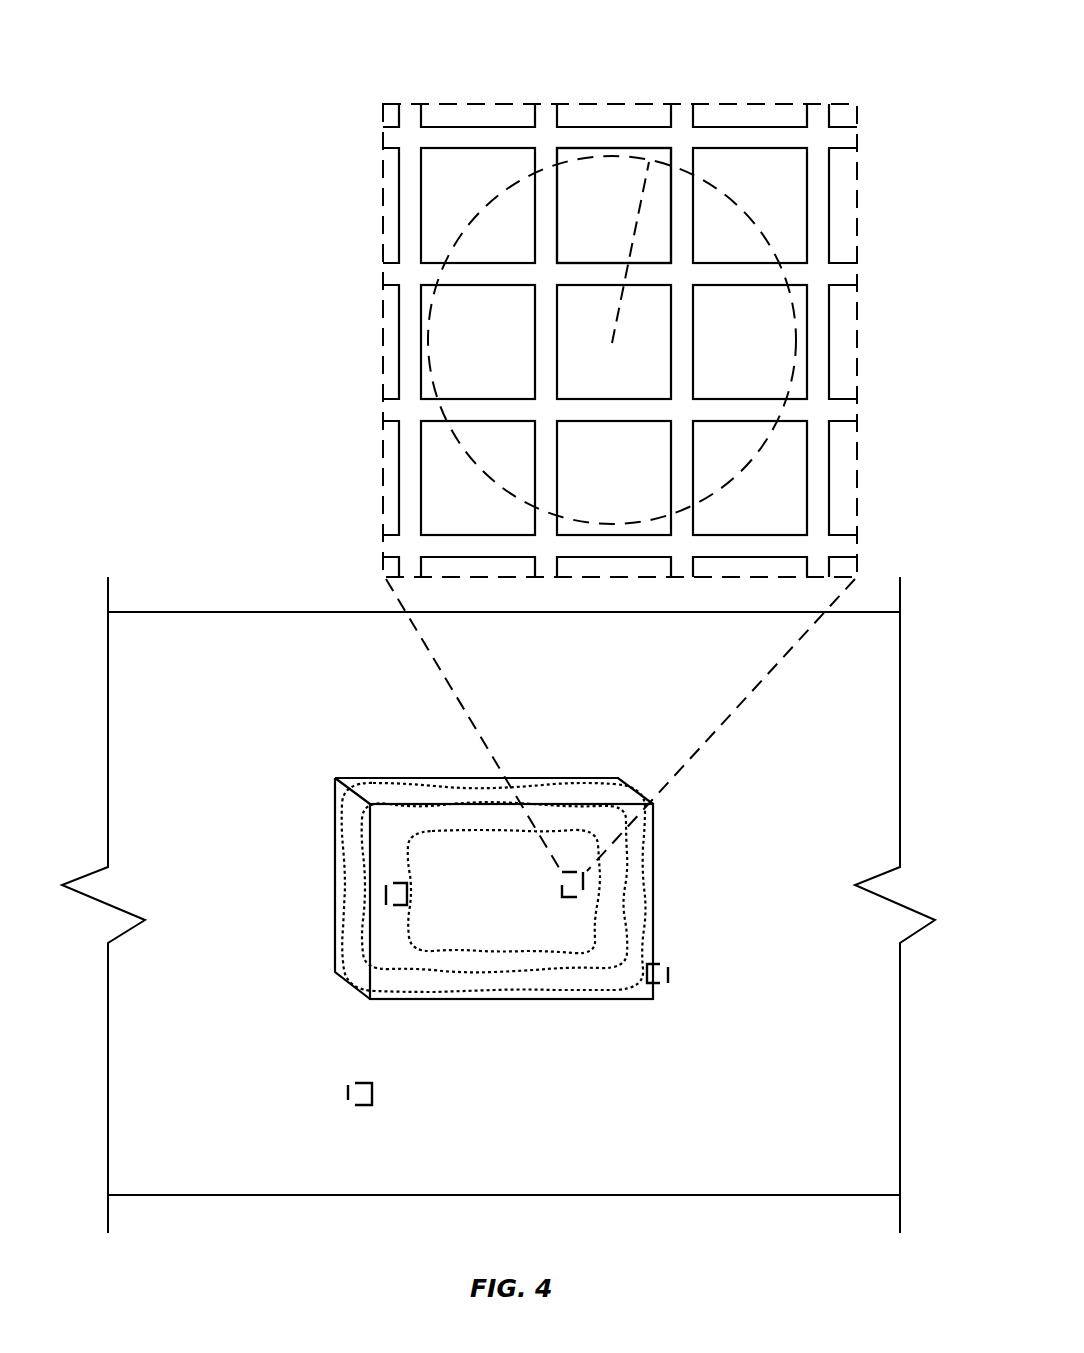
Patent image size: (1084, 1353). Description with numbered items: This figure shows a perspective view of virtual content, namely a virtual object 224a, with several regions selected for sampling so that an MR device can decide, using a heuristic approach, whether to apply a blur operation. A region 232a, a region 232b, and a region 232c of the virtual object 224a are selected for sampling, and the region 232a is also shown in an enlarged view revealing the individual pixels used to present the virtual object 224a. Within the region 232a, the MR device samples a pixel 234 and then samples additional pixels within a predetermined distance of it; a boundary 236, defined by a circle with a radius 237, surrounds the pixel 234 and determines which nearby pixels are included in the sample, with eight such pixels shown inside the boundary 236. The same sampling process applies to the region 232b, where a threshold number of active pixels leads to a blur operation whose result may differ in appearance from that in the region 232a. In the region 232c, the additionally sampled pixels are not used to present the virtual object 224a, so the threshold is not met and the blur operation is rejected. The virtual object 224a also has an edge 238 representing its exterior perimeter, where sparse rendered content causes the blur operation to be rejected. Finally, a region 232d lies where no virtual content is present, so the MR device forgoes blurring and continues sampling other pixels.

The virtual object 224a is at (335, 825).
The region 232a is at (748, 104).
The region 232b is at (386, 905).
The region 232c is at (668, 975).
The region 232d is at (348, 1100).
The pixel 234 is at (612, 340).
The boundary 236 is at (557, 167).
The radius 237 is at (638, 220).
The edge 238 is at (653, 912).